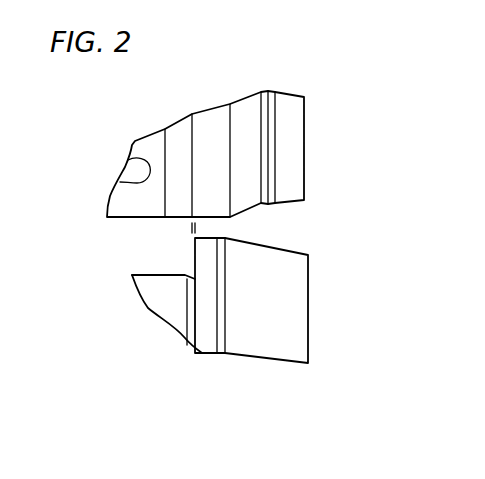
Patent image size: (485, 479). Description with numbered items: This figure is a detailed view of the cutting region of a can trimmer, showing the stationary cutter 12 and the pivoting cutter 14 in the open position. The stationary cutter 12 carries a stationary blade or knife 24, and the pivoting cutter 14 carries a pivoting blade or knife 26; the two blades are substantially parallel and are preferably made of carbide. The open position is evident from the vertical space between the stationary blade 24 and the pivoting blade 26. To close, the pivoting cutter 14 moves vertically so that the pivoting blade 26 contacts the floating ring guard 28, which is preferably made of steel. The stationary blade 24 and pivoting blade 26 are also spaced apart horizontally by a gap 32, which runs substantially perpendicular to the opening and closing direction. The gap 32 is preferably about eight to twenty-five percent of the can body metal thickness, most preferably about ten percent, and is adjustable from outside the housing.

The stationary cutter 12 is at (322, 148).
The pivoting cutter 14 is at (322, 288).
The stationary blade 24 is at (177, 120).
The pivoting blade 26 is at (208, 348).
The floating ring guard 28 is at (213, 113).
The gap 32 is at (150, 228).